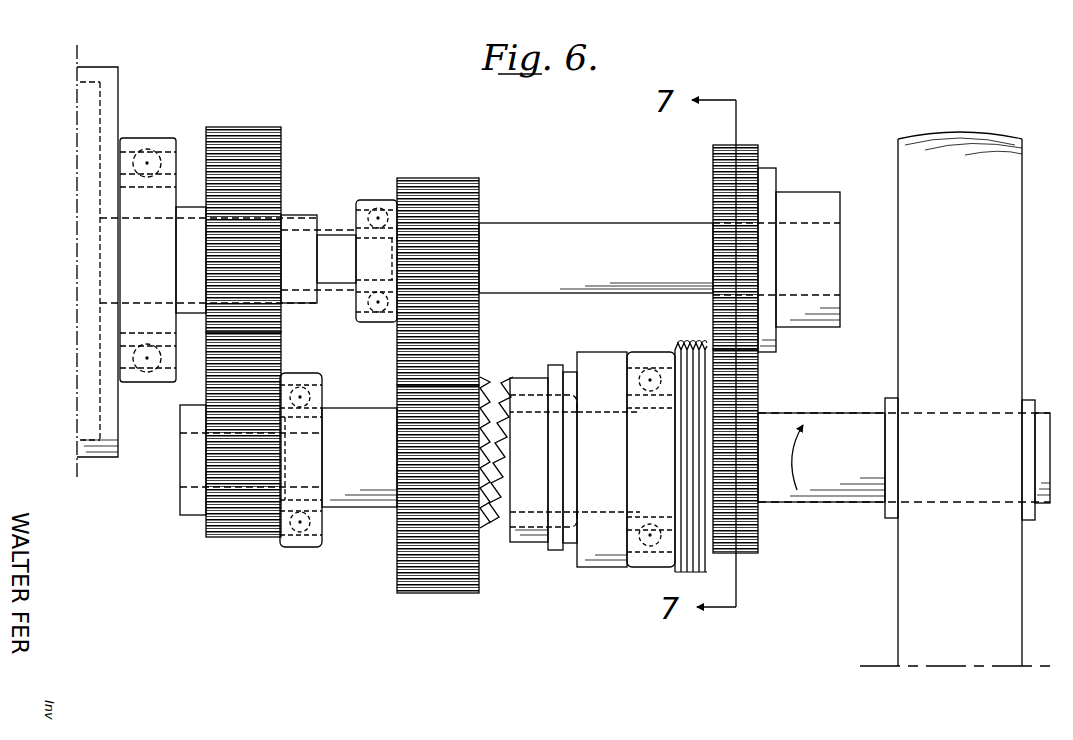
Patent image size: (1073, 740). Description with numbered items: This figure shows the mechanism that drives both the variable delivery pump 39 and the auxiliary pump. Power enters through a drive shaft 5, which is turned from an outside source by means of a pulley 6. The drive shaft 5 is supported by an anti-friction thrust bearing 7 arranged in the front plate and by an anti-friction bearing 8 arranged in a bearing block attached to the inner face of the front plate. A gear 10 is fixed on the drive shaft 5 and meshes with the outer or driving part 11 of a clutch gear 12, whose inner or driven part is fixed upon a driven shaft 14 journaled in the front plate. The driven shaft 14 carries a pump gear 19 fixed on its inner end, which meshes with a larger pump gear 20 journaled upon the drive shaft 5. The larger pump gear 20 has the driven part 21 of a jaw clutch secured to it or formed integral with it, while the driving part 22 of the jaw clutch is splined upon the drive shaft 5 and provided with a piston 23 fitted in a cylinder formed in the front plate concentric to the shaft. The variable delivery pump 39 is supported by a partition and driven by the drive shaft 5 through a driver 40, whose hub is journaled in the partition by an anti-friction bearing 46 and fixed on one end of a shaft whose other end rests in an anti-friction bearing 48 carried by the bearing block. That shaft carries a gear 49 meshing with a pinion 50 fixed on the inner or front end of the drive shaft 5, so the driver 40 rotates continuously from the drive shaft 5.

The driver 40 is at (85, 89).
The anti-friction bearing 46 is at (147, 142).
The gear 49 is at (282, 146).
The pinion 50 is at (218, 537).
The variable delivery pump 39 is at (340, 235).
The anti-friction bearing 48 is at (383, 202).
The pump gear 19 is at (480, 184).
The pump gear 20 is at (432, 594).
The driven shaft 14 is at (596, 258).
The clutch gear 12 is at (760, 148).
The gear 10 is at (758, 539).
The driving part 11 is at (770, 183).
The anti-friction thrust bearing 7 is at (650, 363).
The anti-friction bearing 8 is at (306, 548).
The driven part of jaw clutch 21 is at (487, 378).
The driving part of jaw clutch 22 is at (512, 382).
The piston 23 is at (553, 552).
The drive shaft 5 is at (904, 457).
The pulley 6 is at (957, 399).